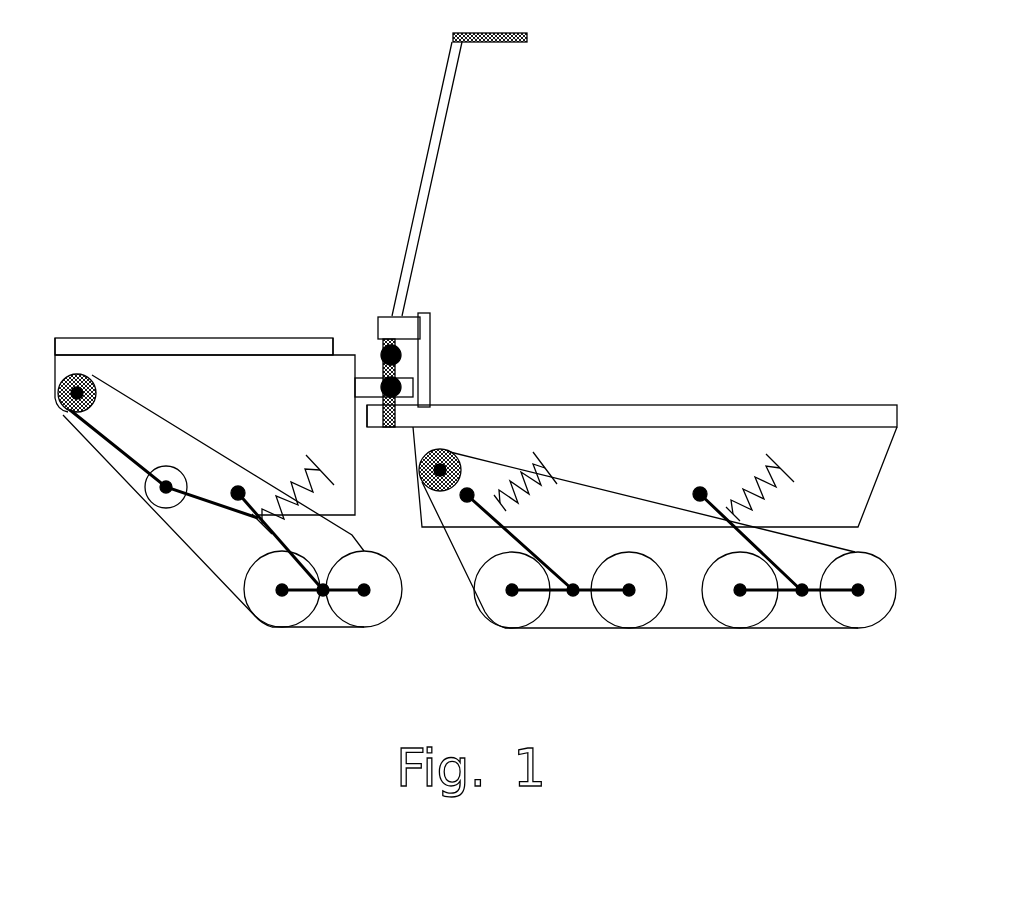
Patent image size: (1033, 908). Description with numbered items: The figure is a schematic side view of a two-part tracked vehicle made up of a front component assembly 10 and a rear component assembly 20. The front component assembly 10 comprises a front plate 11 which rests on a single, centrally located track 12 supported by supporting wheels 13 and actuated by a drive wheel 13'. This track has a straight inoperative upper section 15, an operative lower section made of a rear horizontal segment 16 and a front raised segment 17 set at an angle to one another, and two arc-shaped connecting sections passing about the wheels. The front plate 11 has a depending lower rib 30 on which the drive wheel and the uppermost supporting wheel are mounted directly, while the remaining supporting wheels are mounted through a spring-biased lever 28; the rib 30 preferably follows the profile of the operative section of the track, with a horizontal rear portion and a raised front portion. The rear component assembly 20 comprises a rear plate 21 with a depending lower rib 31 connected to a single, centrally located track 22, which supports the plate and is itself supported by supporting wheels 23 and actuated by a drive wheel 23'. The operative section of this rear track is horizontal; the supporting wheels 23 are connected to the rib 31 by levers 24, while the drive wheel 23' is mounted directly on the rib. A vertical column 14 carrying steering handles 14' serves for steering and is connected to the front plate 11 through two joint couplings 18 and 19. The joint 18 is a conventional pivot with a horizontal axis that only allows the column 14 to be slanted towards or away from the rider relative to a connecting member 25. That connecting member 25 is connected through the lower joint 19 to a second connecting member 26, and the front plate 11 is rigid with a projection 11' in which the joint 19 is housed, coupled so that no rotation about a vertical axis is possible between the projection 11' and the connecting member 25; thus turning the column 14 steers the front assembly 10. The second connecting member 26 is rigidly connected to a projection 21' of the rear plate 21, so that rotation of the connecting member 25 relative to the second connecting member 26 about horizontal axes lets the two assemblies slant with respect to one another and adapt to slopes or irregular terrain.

The front component assembly 10 is at (75, 330).
The front plate 11 is at (205, 399).
The projection 11' is at (345, 400).
The track 12 is at (196, 562).
The supporting wheels 13 is at (266, 582).
The drive wheel 13' is at (67, 428).
The vertical column 14 is at (439, 179).
The steering handles 14' is at (520, 21).
The inoperative upper section 15 is at (148, 413).
The rear horizontal segment 16 is at (345, 628).
The front raised segment 17 is at (180, 538).
The joint coupling 18 is at (415, 318).
The lower joint 19 is at (398, 385).
The rear component assembly 20 is at (606, 393).
The rear plate 21 is at (655, 414).
The projection 21' is at (385, 444).
The track 22 is at (822, 638).
The supporting wheels 23 is at (685, 627).
The drive wheel 23' is at (440, 538).
The levers 24 is at (558, 578).
The connecting member 25 is at (395, 367).
The second connecting member 26 is at (395, 405).
The spring-biased lever 28 is at (262, 548).
The lower rib 30 is at (160, 385).
The lower rib 31 is at (663, 445).